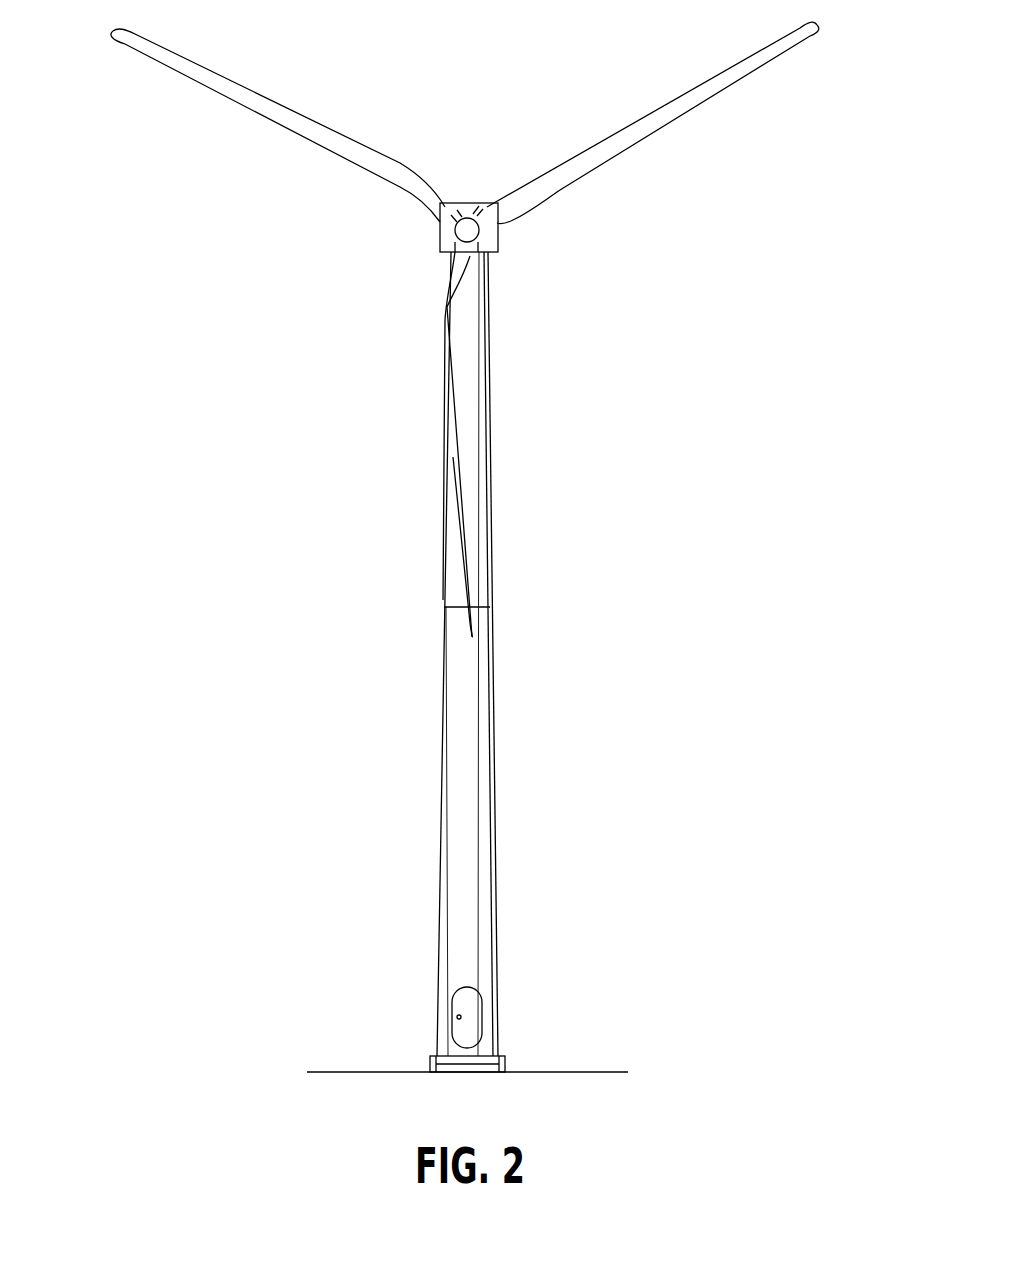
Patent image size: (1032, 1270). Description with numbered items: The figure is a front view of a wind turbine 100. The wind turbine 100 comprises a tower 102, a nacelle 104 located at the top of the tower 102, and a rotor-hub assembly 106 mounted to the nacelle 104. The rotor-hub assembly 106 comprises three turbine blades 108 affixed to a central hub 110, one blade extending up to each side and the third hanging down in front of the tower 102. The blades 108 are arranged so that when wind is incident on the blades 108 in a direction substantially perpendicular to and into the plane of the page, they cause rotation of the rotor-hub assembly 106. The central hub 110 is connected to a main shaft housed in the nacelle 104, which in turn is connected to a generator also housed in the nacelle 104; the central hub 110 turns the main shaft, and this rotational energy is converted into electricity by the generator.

The wind turbine 100 is at (178, 694).
The tower 102 is at (492, 727).
The nacelle 104 is at (467, 203).
The rotor-hub assembly 106 is at (521, 247).
The turbine blades 108 is at (757, 67).
The central hub 110 is at (463, 232).